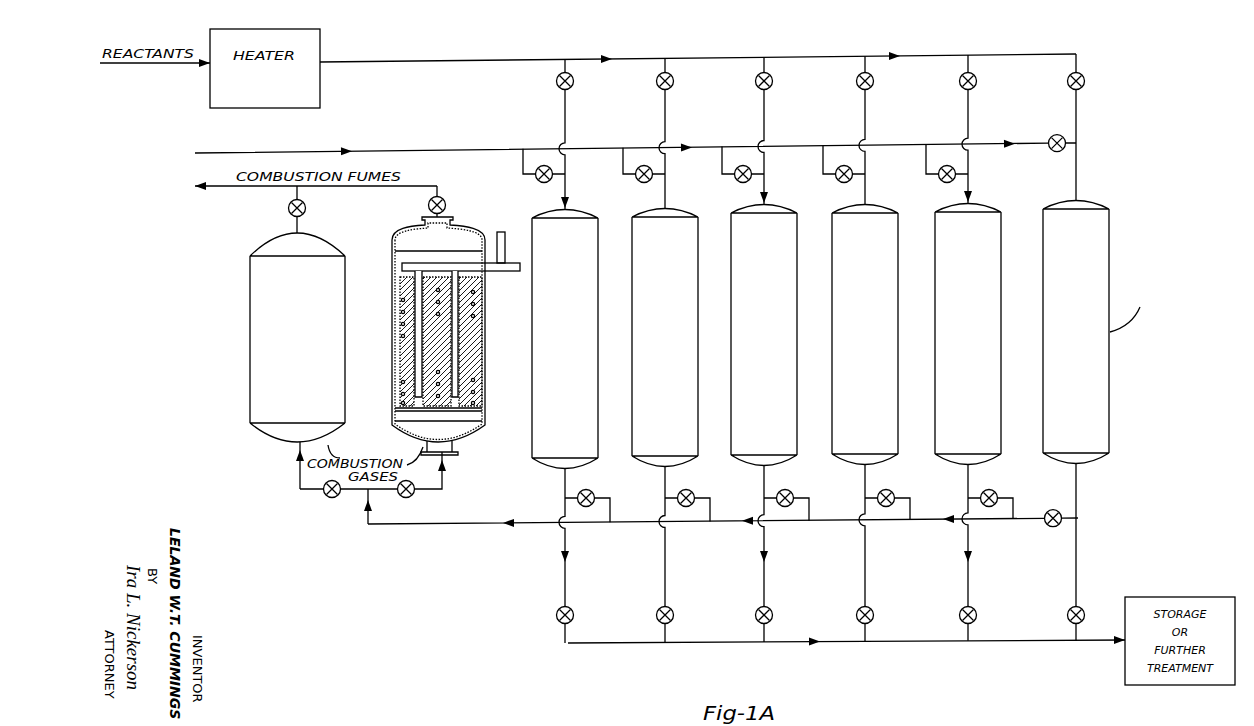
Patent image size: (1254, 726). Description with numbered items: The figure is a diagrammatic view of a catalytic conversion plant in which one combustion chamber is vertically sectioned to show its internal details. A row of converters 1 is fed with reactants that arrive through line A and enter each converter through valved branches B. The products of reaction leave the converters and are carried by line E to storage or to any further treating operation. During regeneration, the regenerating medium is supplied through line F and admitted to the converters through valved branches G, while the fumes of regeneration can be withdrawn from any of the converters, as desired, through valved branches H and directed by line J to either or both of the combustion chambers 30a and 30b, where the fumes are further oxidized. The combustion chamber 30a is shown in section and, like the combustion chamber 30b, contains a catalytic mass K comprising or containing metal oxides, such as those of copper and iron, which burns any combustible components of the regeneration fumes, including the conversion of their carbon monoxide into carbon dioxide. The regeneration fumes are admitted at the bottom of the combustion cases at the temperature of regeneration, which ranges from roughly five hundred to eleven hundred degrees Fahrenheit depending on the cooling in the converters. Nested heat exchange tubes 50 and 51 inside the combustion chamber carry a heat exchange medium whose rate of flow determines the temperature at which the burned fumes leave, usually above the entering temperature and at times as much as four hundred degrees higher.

The converter 1 is at (886, 335).
The combustion chamber 30a is at (438, 336).
The combustion chamber 30b is at (250, 343).
The heat exchange tube 50 is at (419, 386).
The heat exchange tube 51 is at (404, 405).
The catalytic mass K is at (485, 390).
The line A is at (698, 53).
The valved branch B is at (565, 136).
The line E is at (750, 644).
The line F is at (635, 138).
The valved branch G is at (540, 183).
The valved branch H is at (597, 492).
The line J is at (540, 525).